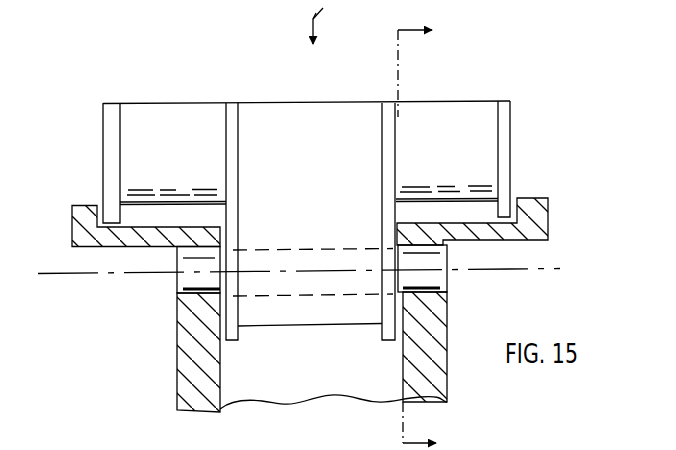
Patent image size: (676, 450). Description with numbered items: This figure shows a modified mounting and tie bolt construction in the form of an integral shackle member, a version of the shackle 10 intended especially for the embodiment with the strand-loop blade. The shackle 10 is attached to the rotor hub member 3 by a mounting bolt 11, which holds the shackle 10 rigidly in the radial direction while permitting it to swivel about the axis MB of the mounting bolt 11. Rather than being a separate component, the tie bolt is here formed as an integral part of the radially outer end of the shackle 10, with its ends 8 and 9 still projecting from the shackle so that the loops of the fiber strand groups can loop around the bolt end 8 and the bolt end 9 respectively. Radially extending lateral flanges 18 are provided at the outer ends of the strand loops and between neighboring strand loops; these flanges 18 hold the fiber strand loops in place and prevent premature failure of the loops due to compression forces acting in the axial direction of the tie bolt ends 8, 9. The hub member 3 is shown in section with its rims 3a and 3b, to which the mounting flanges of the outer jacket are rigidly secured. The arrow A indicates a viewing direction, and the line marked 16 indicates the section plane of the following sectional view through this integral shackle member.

The hub member 3 is at (328, 305).
The rim of rotor hub member 3a is at (85, 240).
The rim of rotor hub member 3b is at (537, 215).
The tie bolt end 8 is at (185, 115).
The tie bolt end 9 is at (458, 110).
The shackle 10 is at (265, 112).
The mounting bolt 11 is at (438, 279).
The lateral flange 18 is at (111, 122).
The section line 16- 16 is at (434, 236).
The viewing direction arrow A is at (325, 22).
The axis of mounting bolt MB is at (555, 268).